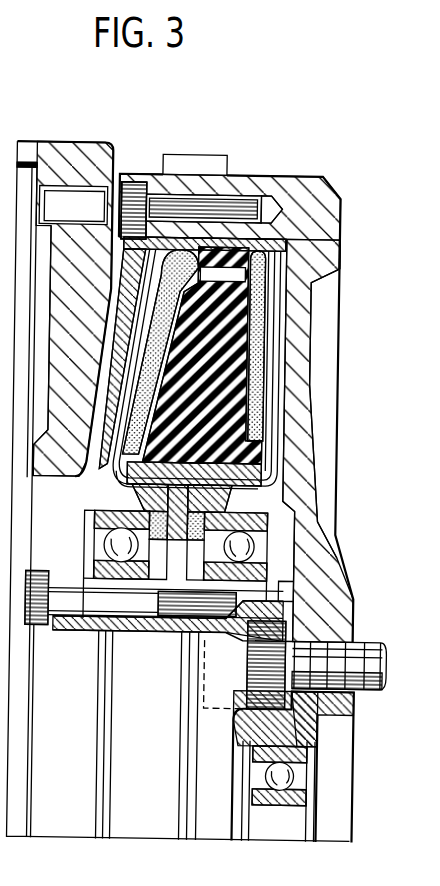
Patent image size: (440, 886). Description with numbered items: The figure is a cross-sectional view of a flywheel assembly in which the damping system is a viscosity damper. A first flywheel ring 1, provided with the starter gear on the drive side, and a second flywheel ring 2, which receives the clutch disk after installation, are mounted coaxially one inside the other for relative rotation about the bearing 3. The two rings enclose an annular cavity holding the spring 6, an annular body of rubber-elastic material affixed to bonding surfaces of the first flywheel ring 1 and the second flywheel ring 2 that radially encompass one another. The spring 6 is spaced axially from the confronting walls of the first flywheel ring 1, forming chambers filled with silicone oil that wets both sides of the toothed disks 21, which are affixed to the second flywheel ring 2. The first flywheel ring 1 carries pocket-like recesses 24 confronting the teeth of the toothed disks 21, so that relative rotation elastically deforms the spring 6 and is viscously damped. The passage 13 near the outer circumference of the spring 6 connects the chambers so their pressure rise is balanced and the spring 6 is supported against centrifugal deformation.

The first flywheel ring 1 is at (283, 172).
The second flywheel ring 2 is at (72, 143).
The bearing 3 is at (100, 521).
The spring 6 is at (237, 396).
The passage 13 is at (222, 272).
The toothed disks 21 is at (168, 285).
The pocket-like recesses 24 is at (150, 323).